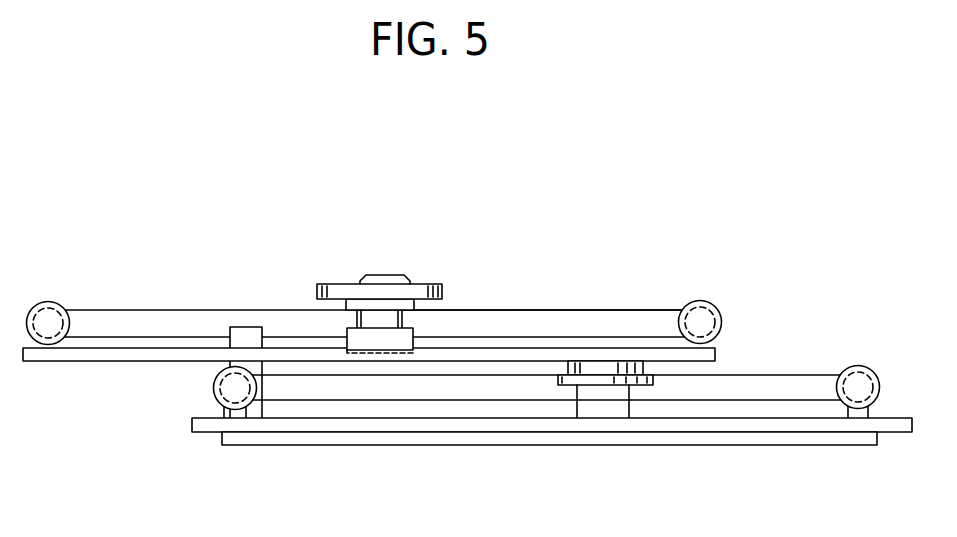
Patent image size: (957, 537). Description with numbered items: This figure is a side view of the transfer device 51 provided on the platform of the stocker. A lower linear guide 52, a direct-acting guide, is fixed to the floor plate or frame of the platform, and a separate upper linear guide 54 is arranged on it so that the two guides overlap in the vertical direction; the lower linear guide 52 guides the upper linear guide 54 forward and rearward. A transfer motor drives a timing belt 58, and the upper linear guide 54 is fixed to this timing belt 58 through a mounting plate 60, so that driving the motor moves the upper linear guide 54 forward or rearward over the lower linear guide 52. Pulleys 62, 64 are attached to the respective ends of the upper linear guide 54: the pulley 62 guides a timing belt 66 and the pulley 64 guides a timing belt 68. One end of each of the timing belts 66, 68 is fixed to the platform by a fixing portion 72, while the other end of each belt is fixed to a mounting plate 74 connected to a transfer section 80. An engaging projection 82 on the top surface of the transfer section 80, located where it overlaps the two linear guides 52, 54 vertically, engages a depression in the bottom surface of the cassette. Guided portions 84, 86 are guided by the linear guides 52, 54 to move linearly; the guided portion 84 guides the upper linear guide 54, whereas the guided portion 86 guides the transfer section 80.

The transfer device 51 is at (599, 180).
The linear guide 52 is at (732, 447).
The linear guide 54 is at (718, 353).
The timing belt 58 is at (818, 373).
The mounting plate 60 is at (567, 386).
The pulley 62 is at (46, 302).
The pulley 64 is at (698, 302).
The timing belt 66 is at (124, 310).
The timing belt 68 is at (607, 309).
The fixing portion 72 is at (238, 330).
The mounting plate 74 is at (347, 305).
The transfer section 80 is at (425, 290).
The engaging projection 82 is at (385, 278).
The guided portion 84 is at (607, 410).
The guided portion 86 is at (381, 349).